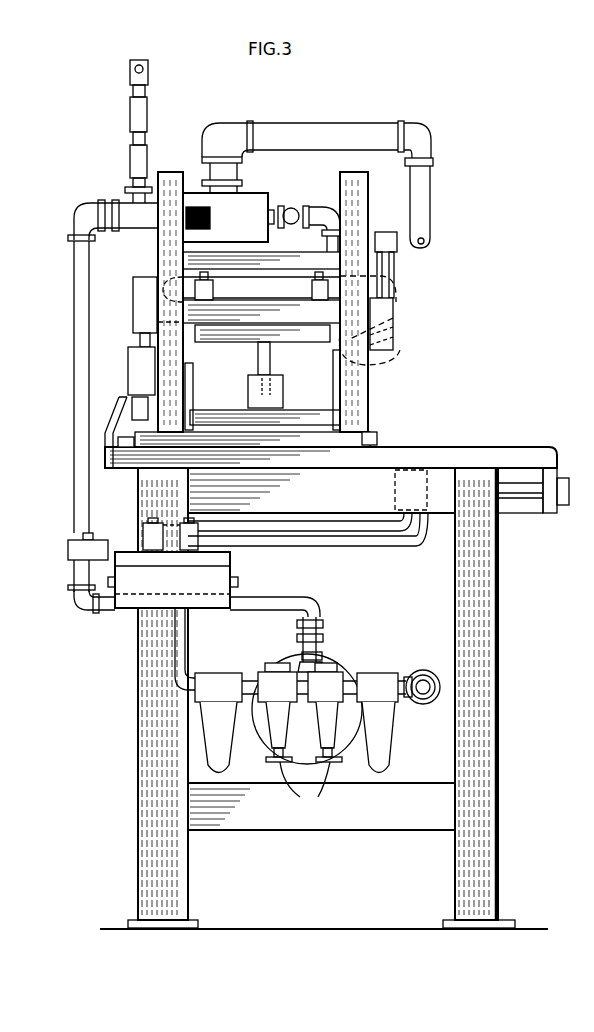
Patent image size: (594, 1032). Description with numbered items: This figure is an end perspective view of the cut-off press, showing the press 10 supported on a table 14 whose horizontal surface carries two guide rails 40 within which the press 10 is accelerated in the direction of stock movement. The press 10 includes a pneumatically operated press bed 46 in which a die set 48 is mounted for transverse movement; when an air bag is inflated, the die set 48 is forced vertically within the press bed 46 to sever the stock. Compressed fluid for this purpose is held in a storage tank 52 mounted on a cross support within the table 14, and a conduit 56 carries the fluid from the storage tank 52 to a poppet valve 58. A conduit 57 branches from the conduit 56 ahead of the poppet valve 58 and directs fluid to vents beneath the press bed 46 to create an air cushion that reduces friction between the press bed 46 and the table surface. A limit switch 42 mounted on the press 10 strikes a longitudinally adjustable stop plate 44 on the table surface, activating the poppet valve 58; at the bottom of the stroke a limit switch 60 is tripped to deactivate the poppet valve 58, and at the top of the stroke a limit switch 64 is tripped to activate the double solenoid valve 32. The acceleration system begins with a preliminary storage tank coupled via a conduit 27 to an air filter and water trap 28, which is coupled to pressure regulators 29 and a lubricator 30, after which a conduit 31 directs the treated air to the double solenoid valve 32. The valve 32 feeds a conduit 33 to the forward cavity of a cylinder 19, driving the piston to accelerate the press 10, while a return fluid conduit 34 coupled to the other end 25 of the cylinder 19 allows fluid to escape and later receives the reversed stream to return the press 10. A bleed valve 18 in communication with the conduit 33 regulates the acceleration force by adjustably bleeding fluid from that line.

The press 10 is at (495, 162).
The table 14 is at (525, 545).
The bleed valve 18 is at (73, 552).
The cylinder 19 is at (440, 496).
The other end of the cylinder 25 is at (418, 478).
The conduit 27 is at (418, 670).
The air filter and water trap 28 is at (372, 673).
The pressure regulators 29 is at (307, 736).
The lubricator 30 is at (216, 673).
The conduit 31 is at (168, 660).
The double solenoid valve 32 is at (170, 578).
The conduit 33 is at (158, 528).
The return fluid conduit 34 is at (346, 546).
The guide rails 40 is at (377, 433).
The limit switch 42 is at (112, 408).
The stop plate 44 is at (103, 440).
The press bed 46 is at (375, 385).
The die set 48 is at (288, 380).
The storage tank 52 is at (268, 746).
The conduit 56 is at (74, 290).
The conduit 57 is at (130, 70).
The poppet valve 58 is at (252, 200).
The limit switch 60 is at (400, 360).
The limit switch 64 is at (385, 302).